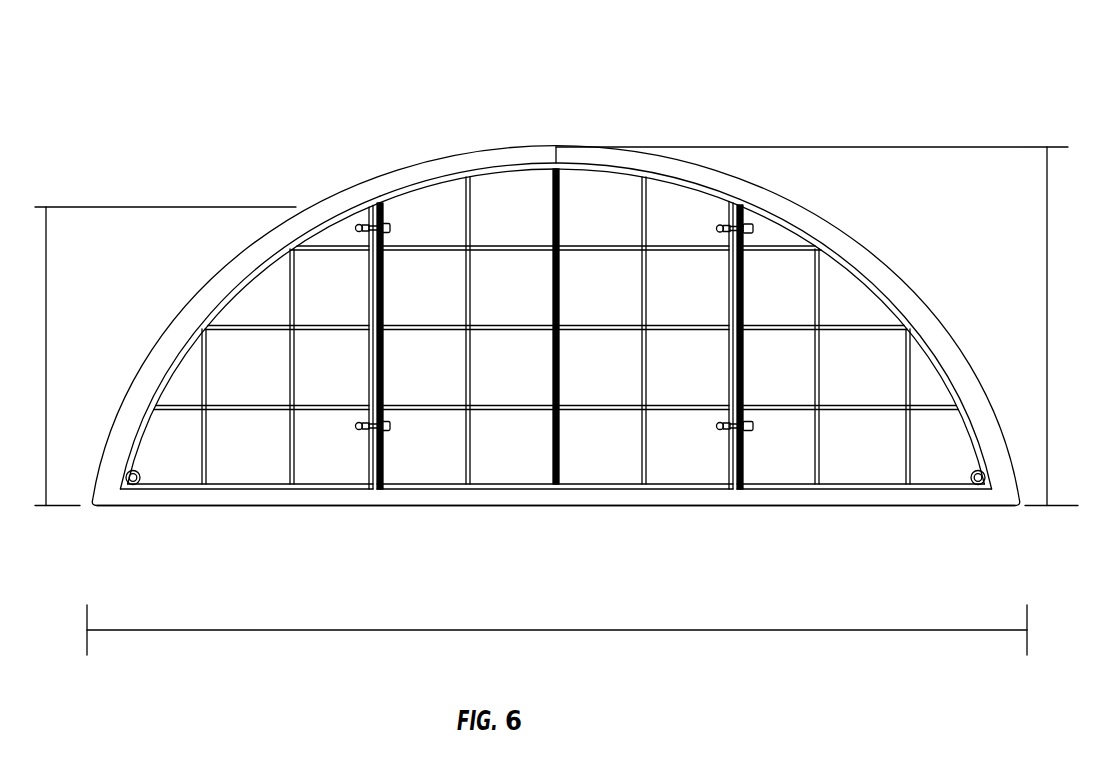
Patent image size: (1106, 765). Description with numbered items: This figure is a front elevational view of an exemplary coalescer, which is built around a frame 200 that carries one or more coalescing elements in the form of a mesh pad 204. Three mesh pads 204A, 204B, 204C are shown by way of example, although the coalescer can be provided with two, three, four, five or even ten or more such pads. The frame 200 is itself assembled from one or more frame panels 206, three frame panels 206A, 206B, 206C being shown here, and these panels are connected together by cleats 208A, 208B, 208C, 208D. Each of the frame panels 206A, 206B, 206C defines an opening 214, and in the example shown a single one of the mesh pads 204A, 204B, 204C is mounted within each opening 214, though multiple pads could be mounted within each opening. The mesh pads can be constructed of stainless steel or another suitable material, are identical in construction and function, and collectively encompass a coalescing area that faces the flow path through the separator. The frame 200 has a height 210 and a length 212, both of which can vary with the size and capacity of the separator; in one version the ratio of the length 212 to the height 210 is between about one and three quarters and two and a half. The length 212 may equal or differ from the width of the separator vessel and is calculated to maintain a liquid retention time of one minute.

The frame 200 is at (519, 140).
The mesh pad 204 is at (122, 502).
The mesh pad 204A is at (207, 514).
The mesh pad 204B is at (468, 514).
The mesh pad 204C is at (907, 515).
The frame panel 206 is at (555, 286).
The frame panel 206A is at (235, 251).
The frame panel 206B is at (386, 179).
The frame panel 206C is at (832, 234).
The cleat 208A is at (355, 231).
The cleat 208B is at (393, 448).
The cleat 208C is at (735, 196).
The cleat 208D is at (756, 445).
The height 210 is at (560, 326).
The length 212 is at (557, 638).
The opening 214 is at (148, 428).